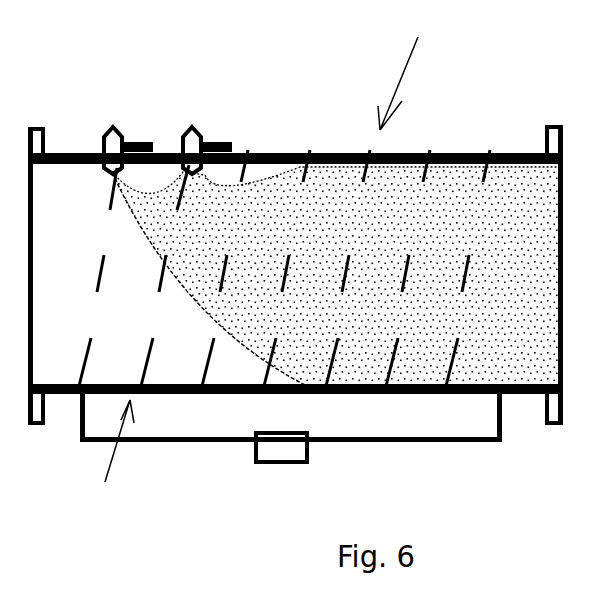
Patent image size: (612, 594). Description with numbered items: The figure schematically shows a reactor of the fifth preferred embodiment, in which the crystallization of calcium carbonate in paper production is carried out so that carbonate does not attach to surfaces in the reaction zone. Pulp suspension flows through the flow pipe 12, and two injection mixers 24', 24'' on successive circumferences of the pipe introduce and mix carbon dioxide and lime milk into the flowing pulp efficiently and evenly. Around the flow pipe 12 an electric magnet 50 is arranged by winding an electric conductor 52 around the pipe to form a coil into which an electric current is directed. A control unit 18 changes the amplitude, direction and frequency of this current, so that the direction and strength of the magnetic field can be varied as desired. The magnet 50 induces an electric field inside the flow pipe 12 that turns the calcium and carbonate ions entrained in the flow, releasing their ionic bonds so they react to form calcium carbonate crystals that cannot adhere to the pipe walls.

The flow pipe 12 is at (267, 153).
The control unit 18 is at (285, 452).
The injection mixer 24' is at (128, 89).
The injection mixer 24'' is at (205, 89).
The electric magnet 50 is at (262, 262).
The electric conductor 52 is at (449, 385).